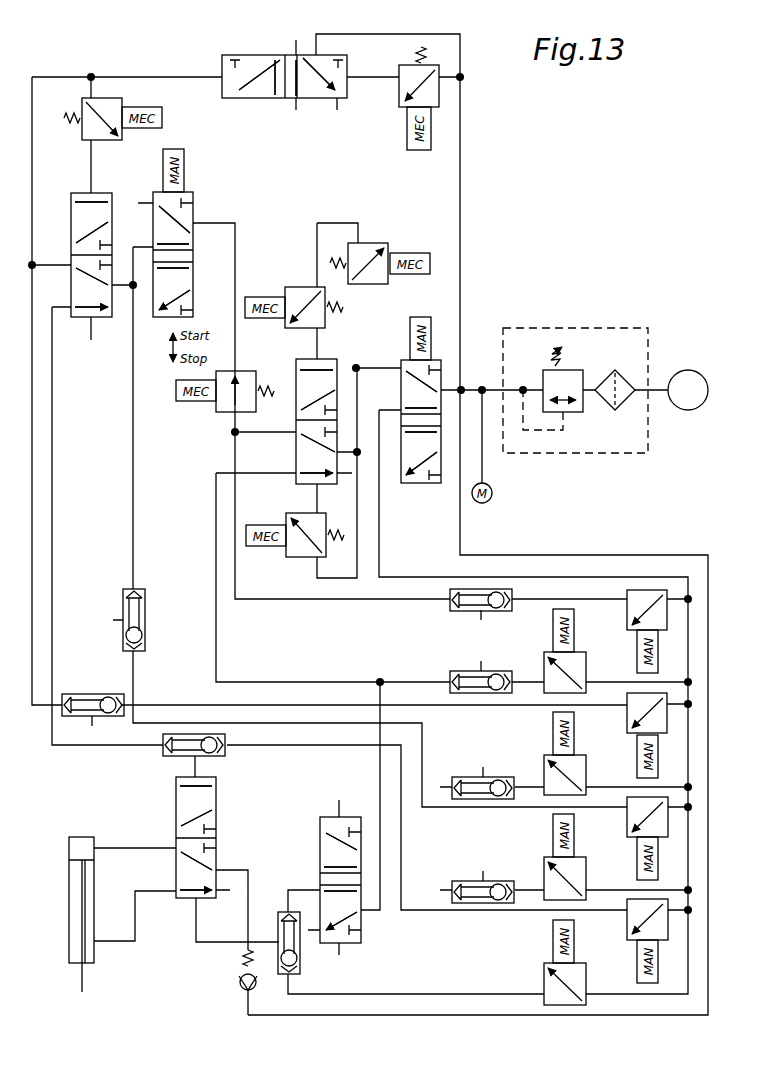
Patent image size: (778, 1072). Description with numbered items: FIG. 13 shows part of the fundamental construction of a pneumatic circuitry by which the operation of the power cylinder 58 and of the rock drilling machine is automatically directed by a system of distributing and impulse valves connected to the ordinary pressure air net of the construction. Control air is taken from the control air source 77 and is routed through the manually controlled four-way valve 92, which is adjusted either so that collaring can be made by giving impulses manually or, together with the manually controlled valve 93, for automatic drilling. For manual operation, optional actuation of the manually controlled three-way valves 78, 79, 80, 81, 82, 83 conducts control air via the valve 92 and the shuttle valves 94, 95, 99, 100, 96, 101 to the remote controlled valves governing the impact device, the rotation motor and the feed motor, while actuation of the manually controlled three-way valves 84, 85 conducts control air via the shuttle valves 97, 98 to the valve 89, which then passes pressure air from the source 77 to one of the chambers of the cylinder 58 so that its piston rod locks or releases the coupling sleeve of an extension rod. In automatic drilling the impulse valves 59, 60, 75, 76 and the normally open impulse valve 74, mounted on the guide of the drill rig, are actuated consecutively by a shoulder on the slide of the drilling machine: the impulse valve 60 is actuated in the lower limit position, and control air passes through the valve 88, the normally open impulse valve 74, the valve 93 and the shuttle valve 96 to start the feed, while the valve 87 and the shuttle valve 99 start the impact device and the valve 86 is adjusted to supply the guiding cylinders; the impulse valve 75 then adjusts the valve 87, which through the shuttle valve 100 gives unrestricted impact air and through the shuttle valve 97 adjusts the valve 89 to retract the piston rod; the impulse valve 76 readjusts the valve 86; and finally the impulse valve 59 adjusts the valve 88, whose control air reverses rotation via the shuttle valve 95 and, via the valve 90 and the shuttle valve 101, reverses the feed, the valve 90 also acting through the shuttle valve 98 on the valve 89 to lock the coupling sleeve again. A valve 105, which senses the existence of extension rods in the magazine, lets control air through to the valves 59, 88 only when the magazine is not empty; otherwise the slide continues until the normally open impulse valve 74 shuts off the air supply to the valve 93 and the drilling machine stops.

The power cylinder 58 is at (73, 837).
The impulse valve 59 is at (296, 286).
The impulse valve 60 is at (290, 557).
The normally open impulse valve 74 is at (217, 412).
The impulse valve 75 is at (118, 140).
The impulse valve 76 is at (399, 102).
The control air source 77 is at (688, 370).
The manually controlled three-way valve 78 is at (627, 610).
The manually controlled three-way valve 79 is at (592, 660).
The manually controlled three-way valve 80 is at (627, 717).
The manually controlled three-way valve 81 is at (593, 762).
The manually controlled three-way valve 82 is at (627, 822).
The manually controlled three-way valve 83 is at (593, 865).
The manually controlled three-way valve 84 is at (627, 925).
The manually controlled three-way valve 85 is at (593, 967).
The valve 86 is at (222, 58).
The valve 87 is at (71, 193).
The valve 88 is at (296, 360).
The valve 89 is at (176, 782).
The valve 90 is at (320, 841).
The manually controlled four-way valve 92 is at (401, 362).
The manually controlled valve 93 is at (193, 193).
The shuttle valve 94 is at (452, 610).
The shuttle valve 95 is at (452, 672).
The shuttle valve 96 is at (142, 589).
The shuttle valve 97 is at (227, 756).
The shuttle valve 98 is at (298, 970).
The shuttle valve 99 is at (101, 694).
The shuttle valve 100 is at (472, 776).
The shuttle valve 101 is at (472, 880).
The valve 105 is at (386, 244).